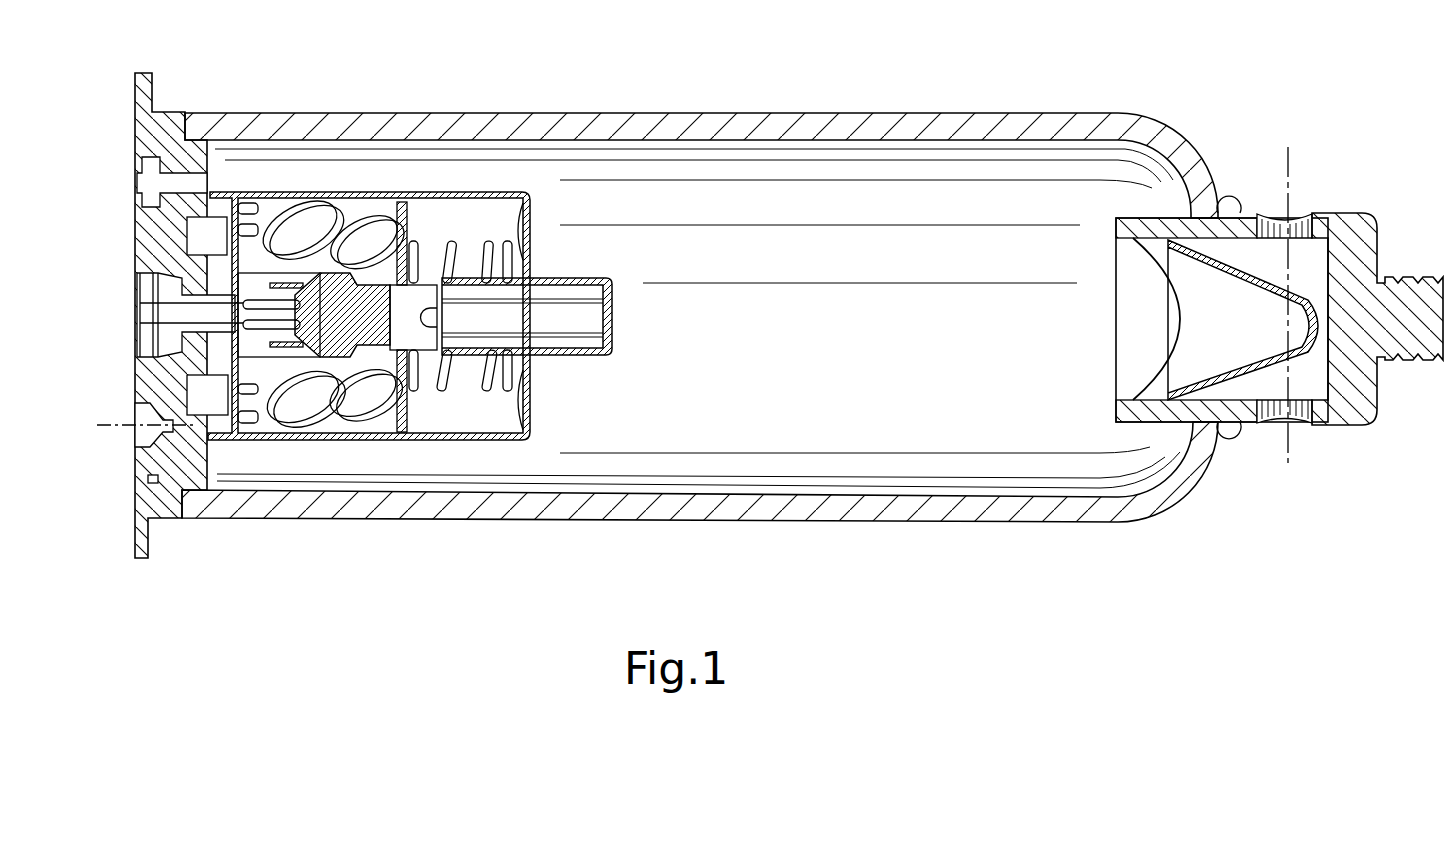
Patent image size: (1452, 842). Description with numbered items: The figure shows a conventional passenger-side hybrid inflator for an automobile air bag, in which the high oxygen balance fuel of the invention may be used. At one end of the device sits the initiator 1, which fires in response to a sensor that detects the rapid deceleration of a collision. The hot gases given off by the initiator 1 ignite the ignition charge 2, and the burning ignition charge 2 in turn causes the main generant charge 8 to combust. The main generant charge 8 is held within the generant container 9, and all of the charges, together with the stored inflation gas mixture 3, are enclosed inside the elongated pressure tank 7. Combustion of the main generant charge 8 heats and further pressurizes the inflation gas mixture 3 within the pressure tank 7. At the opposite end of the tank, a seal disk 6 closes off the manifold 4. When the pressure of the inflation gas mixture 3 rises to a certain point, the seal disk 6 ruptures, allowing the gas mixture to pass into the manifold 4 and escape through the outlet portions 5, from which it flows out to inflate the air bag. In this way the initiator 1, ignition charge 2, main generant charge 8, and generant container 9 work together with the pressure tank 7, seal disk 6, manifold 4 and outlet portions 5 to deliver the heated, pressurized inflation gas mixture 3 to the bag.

The initiator 1 is at (296, 282).
The ignition charge 2 is at (570, 301).
The inflation gas mixture 3 is at (1018, 247).
The manifold 4 is at (1343, 246).
The outlet portions 5 is at (1298, 413).
The seal disk 6 is at (1142, 400).
The pressure tank 7 is at (690, 506).
The main generant charge 8 is at (357, 403).
The generant container 9 is at (277, 440).